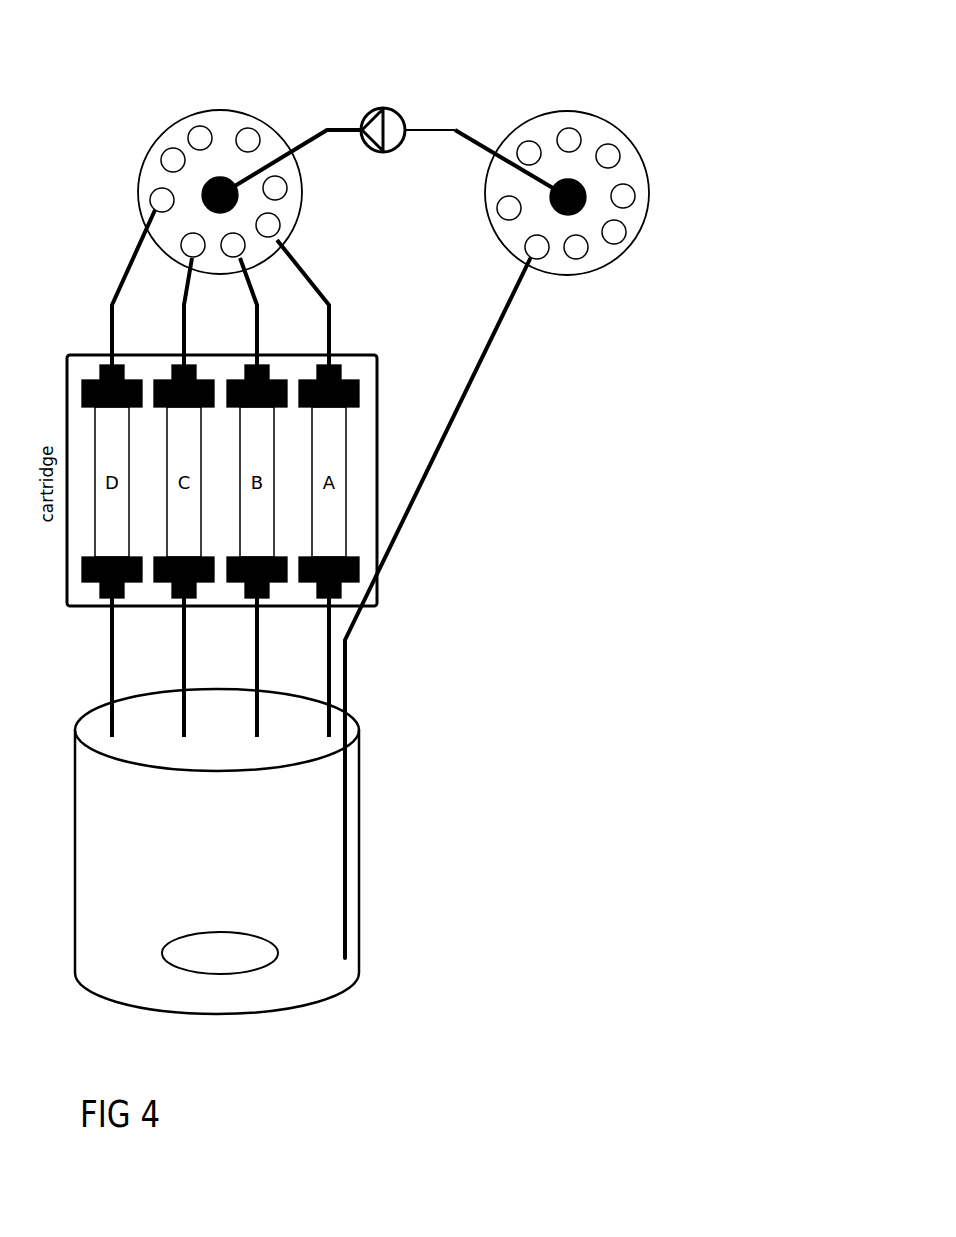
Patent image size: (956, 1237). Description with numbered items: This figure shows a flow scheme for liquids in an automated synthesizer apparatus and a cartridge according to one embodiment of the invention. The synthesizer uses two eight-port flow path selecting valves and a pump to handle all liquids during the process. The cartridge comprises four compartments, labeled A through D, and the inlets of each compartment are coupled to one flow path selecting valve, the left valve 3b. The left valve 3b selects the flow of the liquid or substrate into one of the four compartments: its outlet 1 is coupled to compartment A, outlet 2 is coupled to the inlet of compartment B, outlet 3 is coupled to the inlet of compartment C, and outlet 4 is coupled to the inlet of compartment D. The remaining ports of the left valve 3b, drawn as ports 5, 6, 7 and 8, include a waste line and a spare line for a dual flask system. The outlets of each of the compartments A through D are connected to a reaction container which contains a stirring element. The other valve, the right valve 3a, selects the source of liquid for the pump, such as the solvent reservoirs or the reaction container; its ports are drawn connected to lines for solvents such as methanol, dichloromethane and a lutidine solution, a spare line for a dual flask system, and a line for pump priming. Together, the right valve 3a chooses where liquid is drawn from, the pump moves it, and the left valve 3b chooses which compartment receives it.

The right valve 3a is at (620, 155).
The left valve 3b is at (201, 141).
The outlet 1 is at (268, 225).
The outlet 2 is at (233, 245).
The outlet 3 is at (193, 245).
The outlet 4 is at (162, 200).
The valve port 5 is at (173, 160).
The valve port 6 is at (200, 138).
The valve port 7 is at (248, 140).
The valve port 8 is at (275, 188).